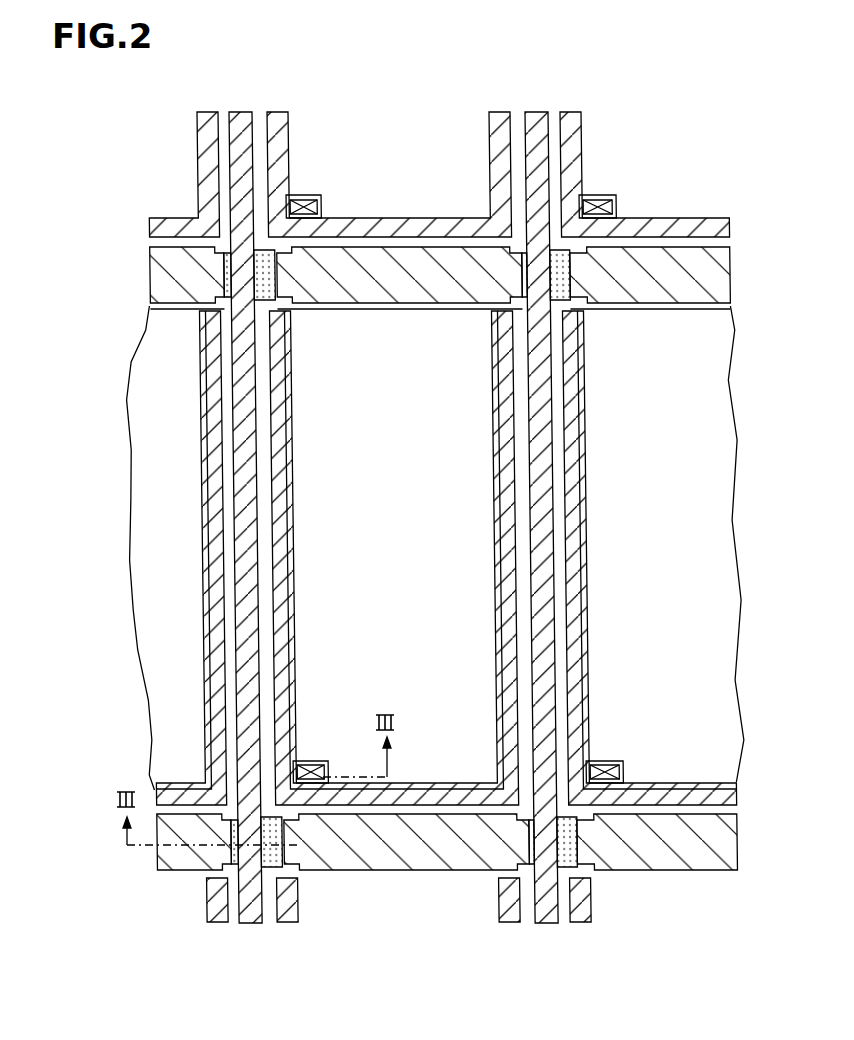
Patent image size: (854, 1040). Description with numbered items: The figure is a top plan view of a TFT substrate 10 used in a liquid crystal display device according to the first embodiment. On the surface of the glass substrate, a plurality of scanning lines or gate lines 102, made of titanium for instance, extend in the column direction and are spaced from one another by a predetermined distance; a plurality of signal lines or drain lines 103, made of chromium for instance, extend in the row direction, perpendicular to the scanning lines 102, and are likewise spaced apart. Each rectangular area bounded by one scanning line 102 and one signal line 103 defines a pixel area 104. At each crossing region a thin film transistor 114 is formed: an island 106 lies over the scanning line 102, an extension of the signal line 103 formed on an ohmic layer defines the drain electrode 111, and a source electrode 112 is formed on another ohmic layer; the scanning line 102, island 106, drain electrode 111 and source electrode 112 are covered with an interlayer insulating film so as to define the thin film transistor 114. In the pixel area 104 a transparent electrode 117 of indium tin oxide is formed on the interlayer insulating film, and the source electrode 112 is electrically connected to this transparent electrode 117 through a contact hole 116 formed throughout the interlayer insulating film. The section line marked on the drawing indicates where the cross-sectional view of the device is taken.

The TFT substrate 10 is at (391, 141).
The scanning line 102 is at (730, 290).
The signal line 103 is at (249, 925).
The pixel area 104 is at (330, 520).
The island 106 is at (226, 875).
The drain electrode 111 is at (228, 853).
The source electrode 112 is at (298, 873).
The thin film transistor 114 is at (310, 910).
The contact hole 116 is at (320, 768).
The transparent electrode 117 is at (147, 377).